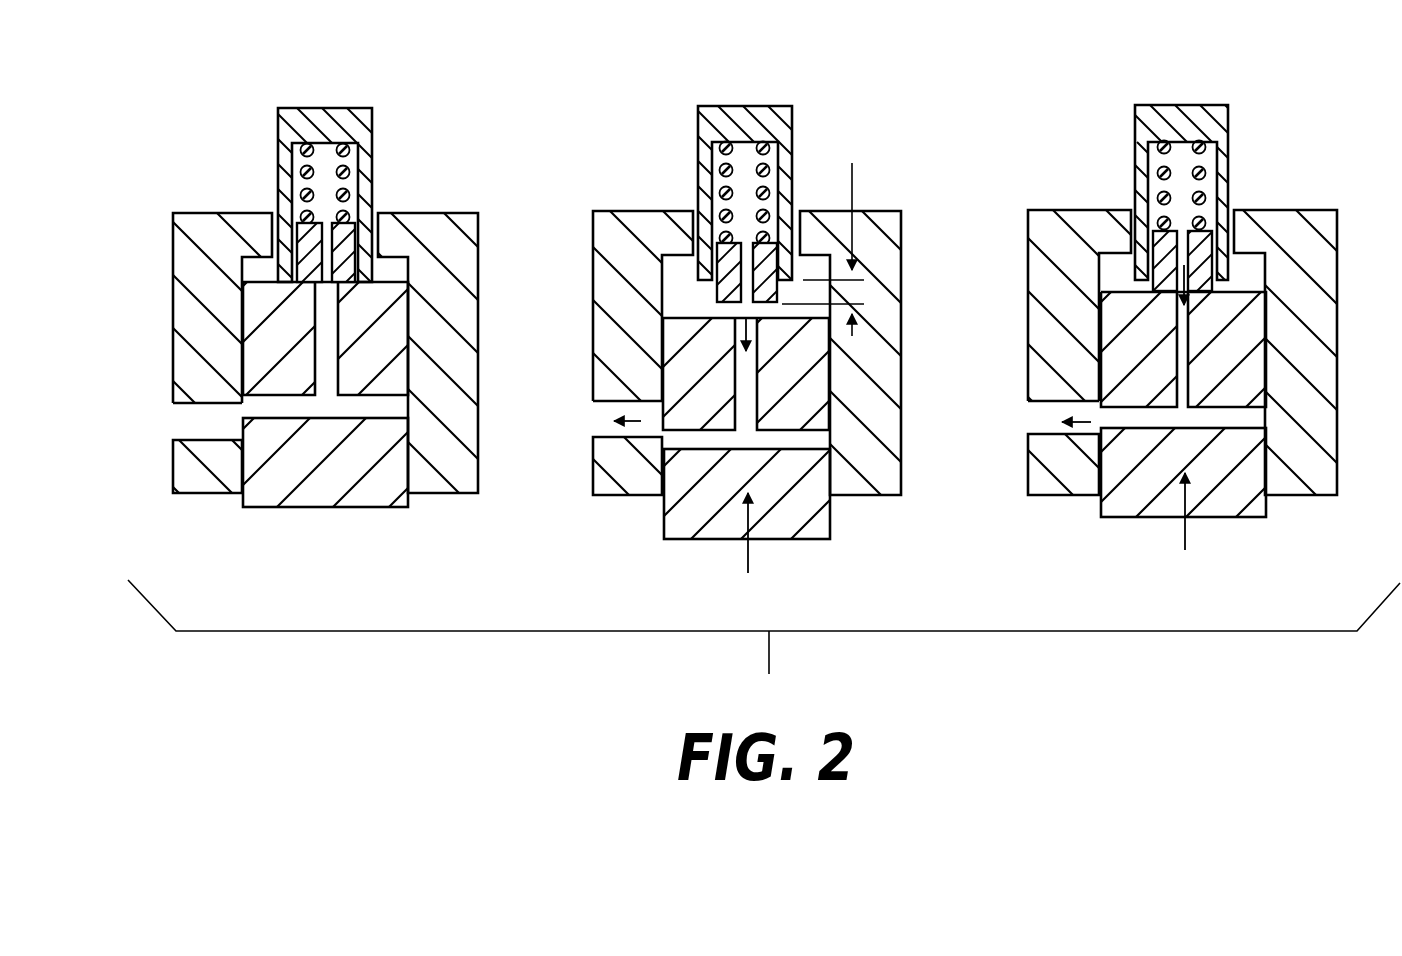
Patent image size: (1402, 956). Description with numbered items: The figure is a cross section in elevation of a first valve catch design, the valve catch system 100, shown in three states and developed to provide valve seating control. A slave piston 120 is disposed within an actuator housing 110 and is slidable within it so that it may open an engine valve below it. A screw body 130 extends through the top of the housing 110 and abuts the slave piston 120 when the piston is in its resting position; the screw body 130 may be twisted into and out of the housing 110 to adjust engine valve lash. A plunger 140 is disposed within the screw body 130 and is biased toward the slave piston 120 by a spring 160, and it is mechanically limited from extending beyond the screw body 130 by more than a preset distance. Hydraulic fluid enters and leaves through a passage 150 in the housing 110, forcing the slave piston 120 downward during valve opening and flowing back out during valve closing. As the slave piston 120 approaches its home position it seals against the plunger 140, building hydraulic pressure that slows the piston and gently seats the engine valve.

The valve catch system 100 is at (220, 152).
The actuator housing 110 is at (188, 293).
The slave piston 120 is at (410, 403).
The screw body 130 is at (352, 105).
The plunger 140 is at (347, 243).
The passage 150 is at (175, 420).
The spring 160 is at (305, 178).